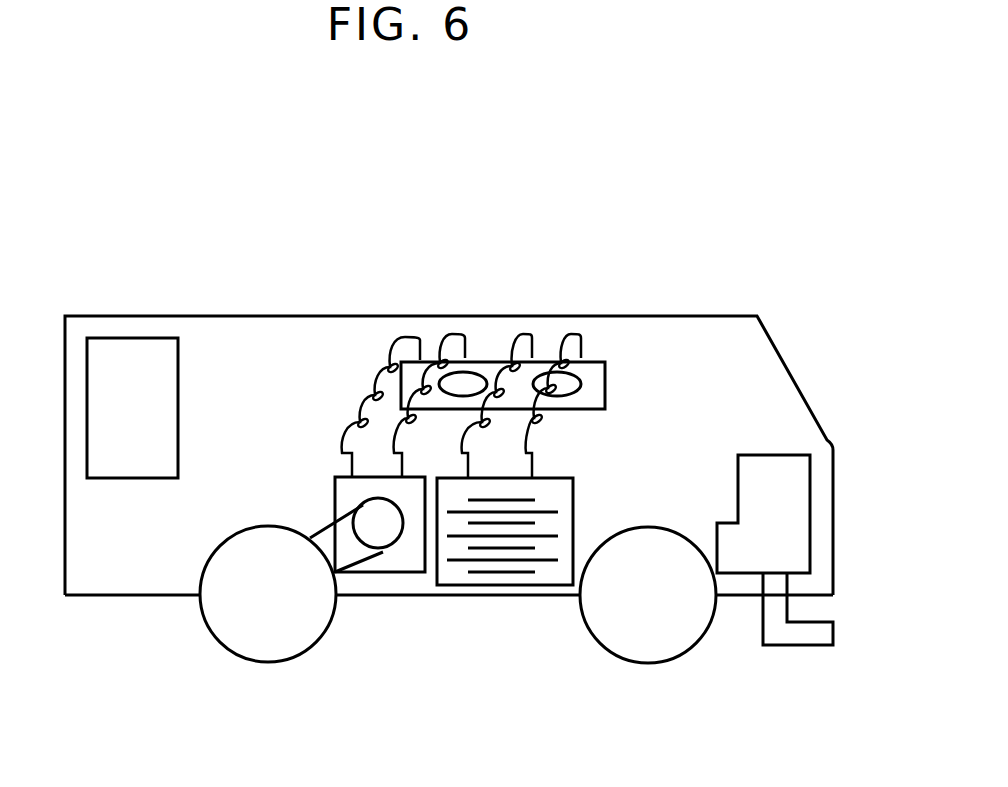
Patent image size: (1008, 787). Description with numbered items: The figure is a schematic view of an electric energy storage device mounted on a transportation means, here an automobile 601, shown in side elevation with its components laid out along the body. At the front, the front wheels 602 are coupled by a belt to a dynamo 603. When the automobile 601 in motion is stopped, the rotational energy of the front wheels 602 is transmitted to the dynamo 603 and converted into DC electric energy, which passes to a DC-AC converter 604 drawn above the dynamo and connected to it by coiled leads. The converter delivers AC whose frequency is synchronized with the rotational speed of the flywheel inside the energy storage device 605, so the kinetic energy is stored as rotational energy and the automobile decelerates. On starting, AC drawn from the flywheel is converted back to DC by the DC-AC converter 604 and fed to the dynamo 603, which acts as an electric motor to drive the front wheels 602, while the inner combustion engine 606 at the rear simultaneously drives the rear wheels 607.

The automobile 601 is at (233, 316).
The front wheels 602 is at (267, 652).
The dynamo 603 is at (395, 563).
The DC-AC converter 604 is at (493, 362).
The energy storage device 605 is at (515, 578).
The inner combustion engine 606 is at (783, 455).
The rear wheels 607 is at (657, 650).